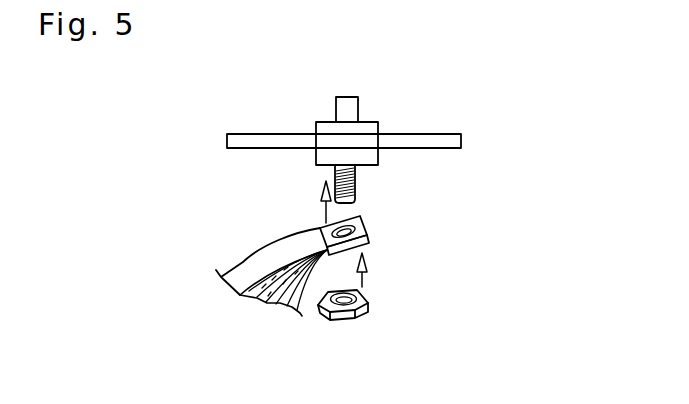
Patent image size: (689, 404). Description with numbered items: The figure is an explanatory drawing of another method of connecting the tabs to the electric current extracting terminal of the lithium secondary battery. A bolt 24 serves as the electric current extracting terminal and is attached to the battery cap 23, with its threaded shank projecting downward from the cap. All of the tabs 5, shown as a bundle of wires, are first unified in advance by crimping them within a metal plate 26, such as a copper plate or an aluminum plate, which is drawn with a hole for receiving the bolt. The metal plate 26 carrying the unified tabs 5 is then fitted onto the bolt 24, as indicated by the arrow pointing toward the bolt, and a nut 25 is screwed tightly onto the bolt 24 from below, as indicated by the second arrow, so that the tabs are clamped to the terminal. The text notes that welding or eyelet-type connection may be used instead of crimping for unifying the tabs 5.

The tabs 5 is at (257, 253).
The battery cap 23 is at (450, 143).
The bolt 24 is at (330, 157).
The nut 25 is at (368, 305).
The metal plate 26 is at (366, 225).